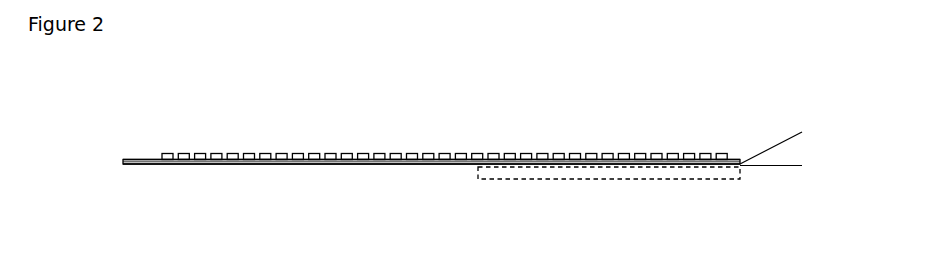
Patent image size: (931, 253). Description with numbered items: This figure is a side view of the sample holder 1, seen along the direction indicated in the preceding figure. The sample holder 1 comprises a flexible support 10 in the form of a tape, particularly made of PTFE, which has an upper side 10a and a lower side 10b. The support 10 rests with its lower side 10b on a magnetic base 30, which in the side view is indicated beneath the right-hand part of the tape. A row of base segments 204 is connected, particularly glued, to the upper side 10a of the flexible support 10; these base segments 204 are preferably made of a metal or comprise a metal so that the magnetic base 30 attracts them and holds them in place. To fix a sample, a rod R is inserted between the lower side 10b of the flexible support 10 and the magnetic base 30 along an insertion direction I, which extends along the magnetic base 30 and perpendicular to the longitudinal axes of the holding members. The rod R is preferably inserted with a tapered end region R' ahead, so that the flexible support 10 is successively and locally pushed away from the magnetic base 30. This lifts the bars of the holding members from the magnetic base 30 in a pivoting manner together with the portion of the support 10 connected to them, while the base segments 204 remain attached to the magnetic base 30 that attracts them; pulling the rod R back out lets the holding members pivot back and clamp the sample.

The sample holder 1 is at (336, 132).
The flexible support 10 is at (263, 163).
The upper side 10a is at (143, 157).
The lower side 10b is at (153, 163).
The base segment 204 is at (217, 152).
The magnetic base 30 is at (669, 177).
The insertion direction I is at (738, 142).
The rod R is at (771, 193).
The tapered end region R' is at (760, 129).